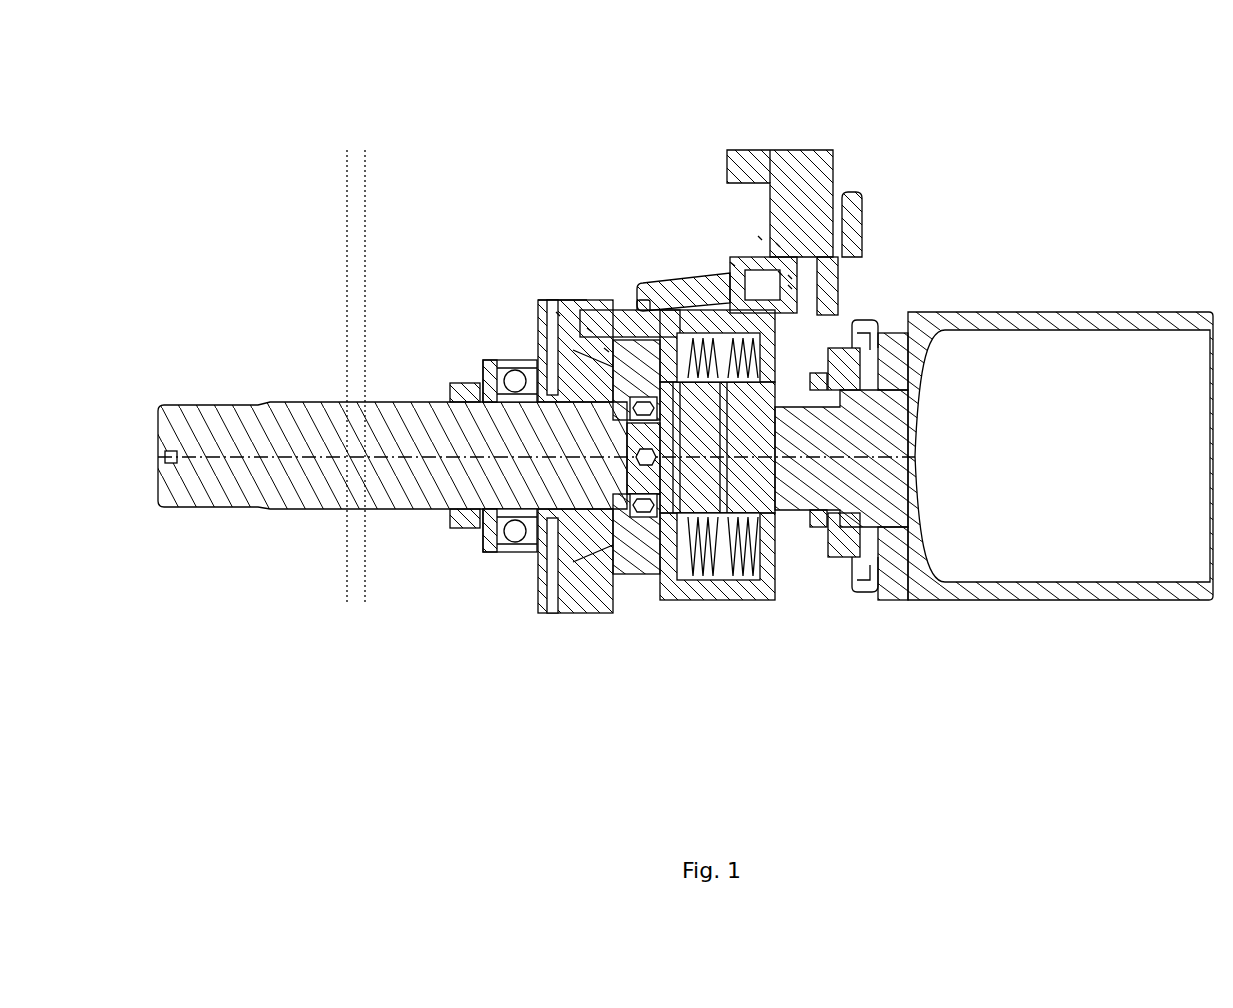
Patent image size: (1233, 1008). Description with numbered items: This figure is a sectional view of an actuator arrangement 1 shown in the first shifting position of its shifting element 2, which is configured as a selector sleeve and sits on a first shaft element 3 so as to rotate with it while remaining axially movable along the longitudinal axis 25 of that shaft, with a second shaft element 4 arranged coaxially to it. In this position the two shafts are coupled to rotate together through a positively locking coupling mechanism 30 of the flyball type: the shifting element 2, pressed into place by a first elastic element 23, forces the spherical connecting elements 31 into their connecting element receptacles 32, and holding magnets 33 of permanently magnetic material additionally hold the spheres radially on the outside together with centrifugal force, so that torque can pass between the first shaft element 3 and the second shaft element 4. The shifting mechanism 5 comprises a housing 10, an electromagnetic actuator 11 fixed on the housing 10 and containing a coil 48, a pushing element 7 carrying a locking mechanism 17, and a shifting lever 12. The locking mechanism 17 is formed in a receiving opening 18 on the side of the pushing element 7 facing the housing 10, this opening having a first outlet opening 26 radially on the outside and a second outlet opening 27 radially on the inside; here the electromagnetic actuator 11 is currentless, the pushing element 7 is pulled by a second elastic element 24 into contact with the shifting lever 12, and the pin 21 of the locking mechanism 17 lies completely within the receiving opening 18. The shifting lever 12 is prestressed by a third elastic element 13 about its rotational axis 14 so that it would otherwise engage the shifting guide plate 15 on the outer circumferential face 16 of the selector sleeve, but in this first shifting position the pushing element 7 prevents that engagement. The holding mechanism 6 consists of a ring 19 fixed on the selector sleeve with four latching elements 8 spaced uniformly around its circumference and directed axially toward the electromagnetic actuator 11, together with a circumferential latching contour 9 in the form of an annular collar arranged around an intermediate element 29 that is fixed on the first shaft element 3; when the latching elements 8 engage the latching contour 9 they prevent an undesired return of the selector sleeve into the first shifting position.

The actuator arrangement 1 is at (343, 165).
The shifting element 2 is at (553, 297).
The first shaft element 3 is at (813, 493).
The second shaft element 4 is at (367, 475).
The shifting mechanism 5 is at (655, 235).
The holding mechanism 6 is at (696, 322).
The pushing element 7 is at (790, 287).
The latching elements 8 is at (690, 318).
The latching contour 9 is at (705, 325).
The housing 10 is at (790, 198).
The electromagnetic actuator 11 is at (995, 284).
The shifting lever 12 is at (560, 315).
The third elastic element 13 is at (731, 523).
The rotational axis 14 is at (725, 330).
The shifting guide plate 15 is at (613, 323).
The outer circumferential face 16 is at (565, 491).
The locking mechanism 17 is at (760, 237).
The receiving opening 18 is at (780, 273).
The ring 19 is at (778, 245).
The pin 21 is at (740, 253).
The first elastic element 23 is at (728, 330).
The second elastic element 24 is at (730, 262).
The longitudinal axis 25 is at (900, 457).
The first outlet opening 26 is at (793, 257).
The second outlet opening 27 is at (790, 277).
The intermediate element 29 is at (748, 335).
The positively locking coupling mechanism 30 is at (587, 337).
The spherical connecting elements 31 is at (590, 330).
The connecting element receptacles 32 is at (607, 350).
The holding magnets 33 is at (583, 333).
The coil 48 is at (827, 303).